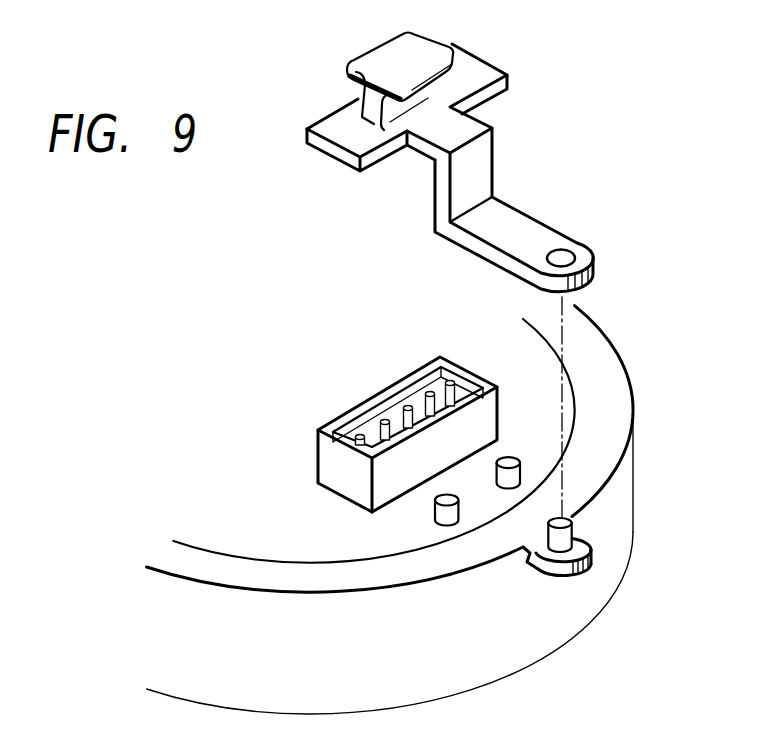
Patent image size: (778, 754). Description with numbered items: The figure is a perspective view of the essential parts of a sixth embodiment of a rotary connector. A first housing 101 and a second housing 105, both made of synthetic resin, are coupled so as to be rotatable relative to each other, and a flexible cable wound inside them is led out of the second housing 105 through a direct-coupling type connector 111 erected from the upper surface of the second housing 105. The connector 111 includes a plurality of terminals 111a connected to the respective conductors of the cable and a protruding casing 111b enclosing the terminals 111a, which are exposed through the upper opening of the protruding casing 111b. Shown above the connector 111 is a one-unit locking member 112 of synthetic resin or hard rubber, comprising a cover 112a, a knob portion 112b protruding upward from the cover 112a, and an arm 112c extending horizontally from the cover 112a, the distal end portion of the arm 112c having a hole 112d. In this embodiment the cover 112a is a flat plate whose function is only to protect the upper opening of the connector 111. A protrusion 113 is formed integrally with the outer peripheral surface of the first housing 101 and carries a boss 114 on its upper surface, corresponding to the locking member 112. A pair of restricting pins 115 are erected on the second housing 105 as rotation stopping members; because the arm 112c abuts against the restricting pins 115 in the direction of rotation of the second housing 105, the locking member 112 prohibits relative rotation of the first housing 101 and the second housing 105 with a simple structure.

The first housing 101 is at (523, 652).
The second housing 105 is at (545, 403).
The direct-coupling type connector 111 is at (333, 434).
The terminals 111a is at (355, 433).
The protruding casing 111b is at (320, 473).
The locking member 112 is at (461, 157).
The cover 112a is at (487, 74).
The knob portion 112b is at (353, 80).
The arm 112c is at (515, 220).
The hole 112d is at (567, 255).
The protrusion 113 is at (565, 575).
The boss 114 is at (573, 538).
The restricting pins 115 is at (443, 518).